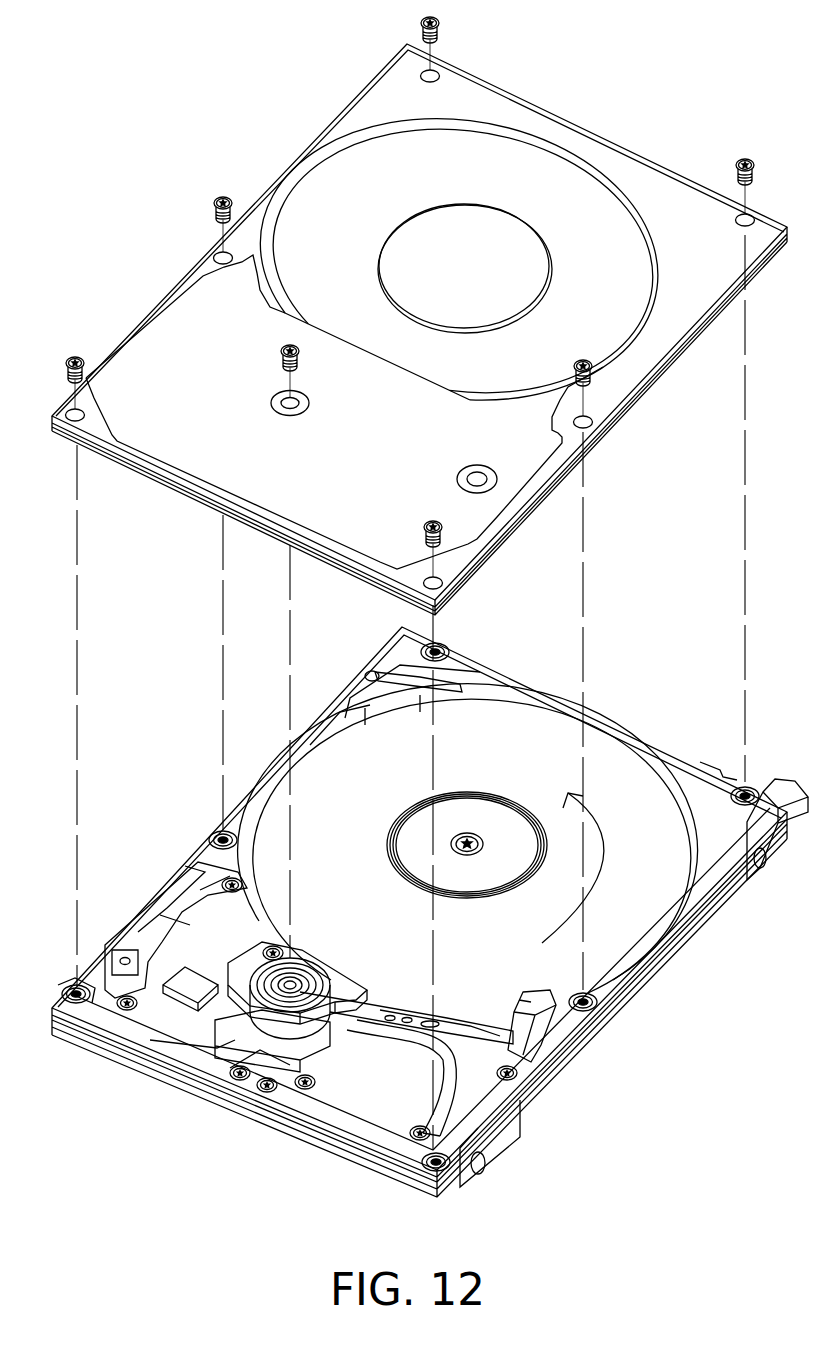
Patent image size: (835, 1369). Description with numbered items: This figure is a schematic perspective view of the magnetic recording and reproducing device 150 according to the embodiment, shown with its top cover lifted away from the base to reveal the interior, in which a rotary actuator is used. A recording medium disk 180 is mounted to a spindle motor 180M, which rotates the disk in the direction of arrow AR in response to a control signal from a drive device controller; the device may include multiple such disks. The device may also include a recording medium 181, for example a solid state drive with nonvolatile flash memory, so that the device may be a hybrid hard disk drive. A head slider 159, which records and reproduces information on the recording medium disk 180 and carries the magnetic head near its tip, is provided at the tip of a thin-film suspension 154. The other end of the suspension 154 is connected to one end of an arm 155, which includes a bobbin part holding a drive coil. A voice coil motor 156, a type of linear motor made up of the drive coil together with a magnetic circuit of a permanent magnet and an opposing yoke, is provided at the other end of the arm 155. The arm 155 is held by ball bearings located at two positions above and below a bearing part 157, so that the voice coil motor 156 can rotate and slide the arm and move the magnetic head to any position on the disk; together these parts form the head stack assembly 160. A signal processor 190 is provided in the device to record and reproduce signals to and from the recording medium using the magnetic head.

The magnetic recording and reproducing device 150 is at (637, 94).
The suspension 154 is at (373, 1017).
The arm 155 is at (271, 980).
The voice coil motor 156 is at (283, 962).
The bearing part 157 is at (215, 1048).
The head slider 159 is at (510, 1040).
The head stack assembly 160 is at (380, 1008).
The recording medium disk 180 is at (525, 757).
The spindle motor 180M is at (507, 800).
The recording medium 181 is at (192, 988).
The signal processor 190 is at (402, 1146).
The arrow AR is at (607, 880).